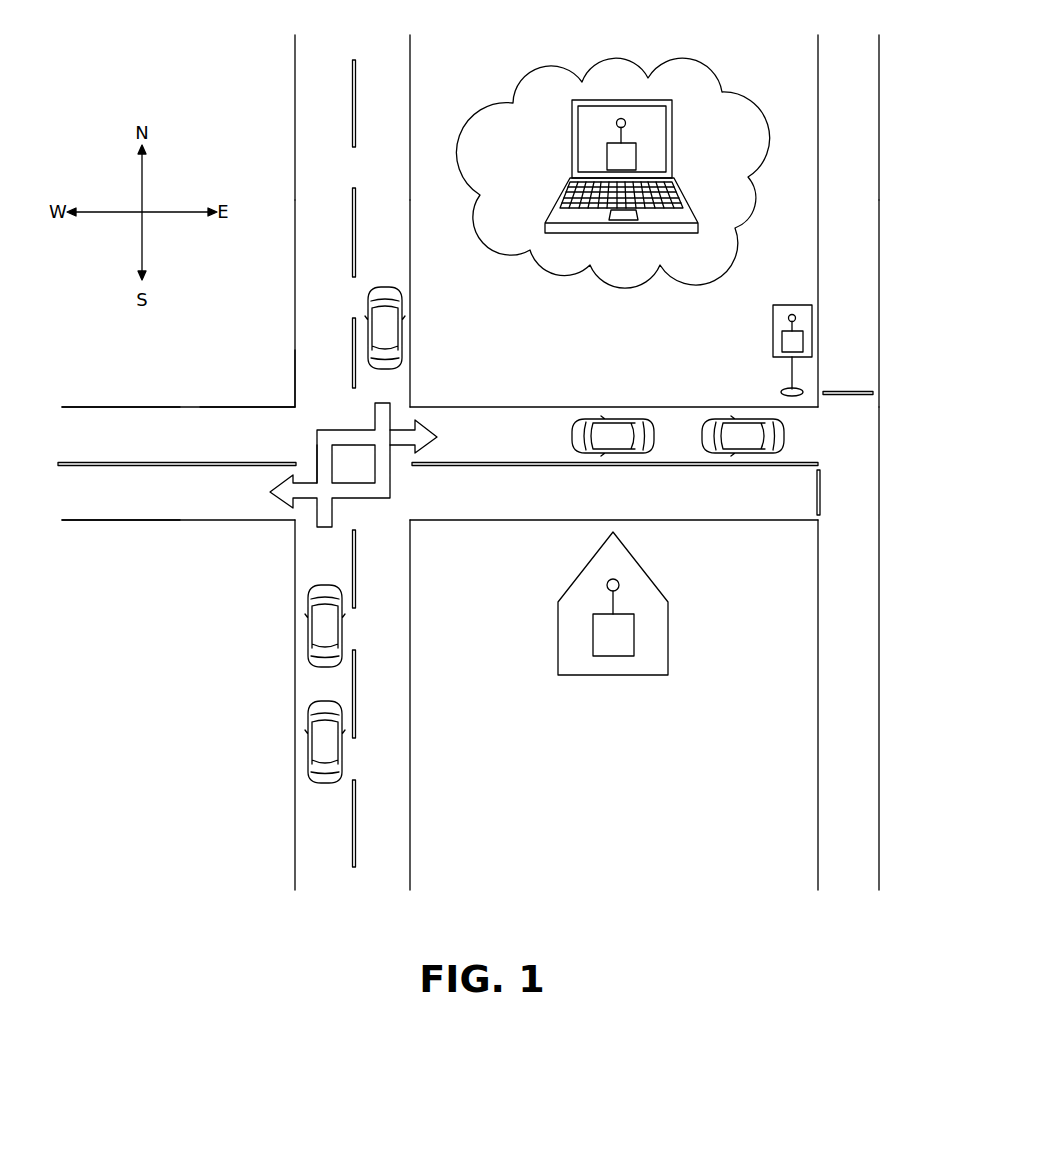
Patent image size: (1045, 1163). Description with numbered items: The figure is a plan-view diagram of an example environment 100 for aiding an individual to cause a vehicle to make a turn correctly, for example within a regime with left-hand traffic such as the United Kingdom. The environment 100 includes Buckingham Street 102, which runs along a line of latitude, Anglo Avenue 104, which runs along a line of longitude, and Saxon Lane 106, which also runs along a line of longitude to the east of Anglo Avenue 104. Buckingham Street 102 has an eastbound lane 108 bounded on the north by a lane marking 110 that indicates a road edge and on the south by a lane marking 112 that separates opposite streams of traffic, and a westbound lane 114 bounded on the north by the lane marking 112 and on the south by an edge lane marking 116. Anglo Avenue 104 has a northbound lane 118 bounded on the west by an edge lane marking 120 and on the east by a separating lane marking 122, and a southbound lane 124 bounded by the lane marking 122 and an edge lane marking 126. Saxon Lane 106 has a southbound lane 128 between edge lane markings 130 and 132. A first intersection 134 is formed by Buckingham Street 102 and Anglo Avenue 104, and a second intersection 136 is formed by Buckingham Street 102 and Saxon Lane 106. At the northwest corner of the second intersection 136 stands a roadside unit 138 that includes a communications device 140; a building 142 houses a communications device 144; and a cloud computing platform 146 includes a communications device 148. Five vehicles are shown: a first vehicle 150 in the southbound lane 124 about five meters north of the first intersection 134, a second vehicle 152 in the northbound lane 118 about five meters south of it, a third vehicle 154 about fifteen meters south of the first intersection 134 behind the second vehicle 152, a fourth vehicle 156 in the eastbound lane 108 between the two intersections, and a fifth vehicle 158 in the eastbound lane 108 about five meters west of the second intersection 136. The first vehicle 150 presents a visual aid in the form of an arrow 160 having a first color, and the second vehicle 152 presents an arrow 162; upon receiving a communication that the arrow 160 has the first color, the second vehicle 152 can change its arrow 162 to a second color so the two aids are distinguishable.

The environment 100 is at (164, 28).
The Buckingham Street 102 is at (490, 508).
The Anglo Avenue 104 is at (397, 730).
The Saxon Lane 106 is at (830, 713).
The lane #1 for eastbound traffic 108 is at (80, 433).
The lane marking 110 is at (97, 407).
The lane marking 112 is at (136, 463).
The lane #1 for westbound traffic 114 is at (80, 496).
The lane marking 116 is at (100, 521).
The lane #1 for northbound traffic 118 is at (322, 48).
The lane marking 120 is at (295, 158).
The lane marking 122 is at (352, 114).
The lane #1 for southbound traffic 124 is at (385, 48).
The lane marking 126 is at (410, 128).
The lane #1 for southbound traffic 128 is at (843, 48).
The lane marking 130 is at (818, 192).
The lane marking 132 is at (879, 162).
The first intersection 134 is at (311, 415).
The second intersection 136 is at (847, 470).
The roadside unit 138 is at (772, 340).
The communications device 140 is at (790, 306).
The building 142 is at (653, 580).
The communications device 144 is at (636, 632).
The cloud computing platform 146 is at (658, 70).
The communications device 148 is at (607, 143).
The first vehicle 150 is at (388, 326).
The second vehicle 152 is at (322, 628).
The third vehicle 154 is at (322, 753).
The fourth vehicle 156 is at (605, 425).
The fifth vehicle 158 is at (733, 425).
The arrow 160 is at (287, 495).
The arrow 162 is at (418, 418).